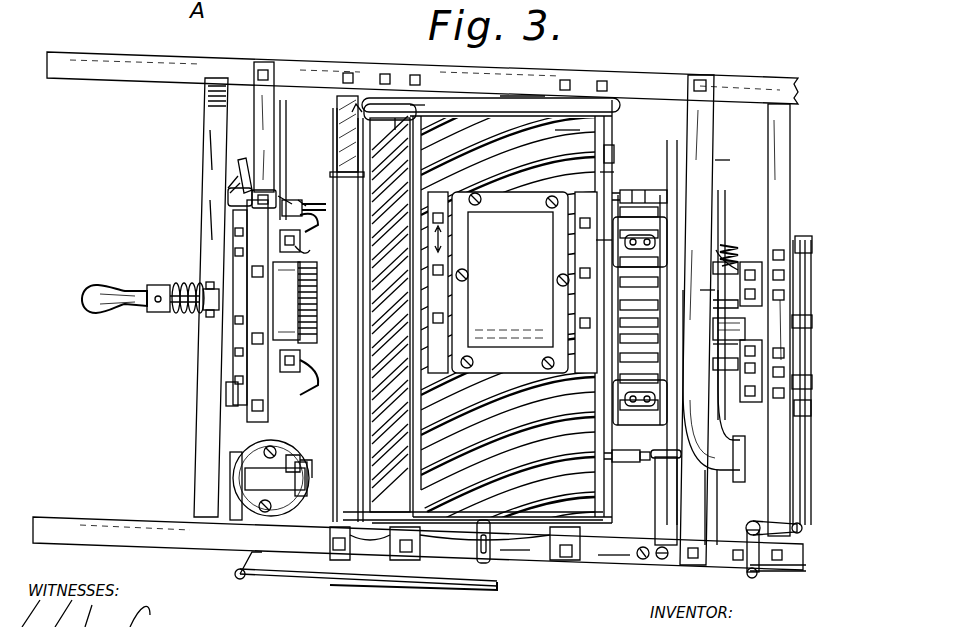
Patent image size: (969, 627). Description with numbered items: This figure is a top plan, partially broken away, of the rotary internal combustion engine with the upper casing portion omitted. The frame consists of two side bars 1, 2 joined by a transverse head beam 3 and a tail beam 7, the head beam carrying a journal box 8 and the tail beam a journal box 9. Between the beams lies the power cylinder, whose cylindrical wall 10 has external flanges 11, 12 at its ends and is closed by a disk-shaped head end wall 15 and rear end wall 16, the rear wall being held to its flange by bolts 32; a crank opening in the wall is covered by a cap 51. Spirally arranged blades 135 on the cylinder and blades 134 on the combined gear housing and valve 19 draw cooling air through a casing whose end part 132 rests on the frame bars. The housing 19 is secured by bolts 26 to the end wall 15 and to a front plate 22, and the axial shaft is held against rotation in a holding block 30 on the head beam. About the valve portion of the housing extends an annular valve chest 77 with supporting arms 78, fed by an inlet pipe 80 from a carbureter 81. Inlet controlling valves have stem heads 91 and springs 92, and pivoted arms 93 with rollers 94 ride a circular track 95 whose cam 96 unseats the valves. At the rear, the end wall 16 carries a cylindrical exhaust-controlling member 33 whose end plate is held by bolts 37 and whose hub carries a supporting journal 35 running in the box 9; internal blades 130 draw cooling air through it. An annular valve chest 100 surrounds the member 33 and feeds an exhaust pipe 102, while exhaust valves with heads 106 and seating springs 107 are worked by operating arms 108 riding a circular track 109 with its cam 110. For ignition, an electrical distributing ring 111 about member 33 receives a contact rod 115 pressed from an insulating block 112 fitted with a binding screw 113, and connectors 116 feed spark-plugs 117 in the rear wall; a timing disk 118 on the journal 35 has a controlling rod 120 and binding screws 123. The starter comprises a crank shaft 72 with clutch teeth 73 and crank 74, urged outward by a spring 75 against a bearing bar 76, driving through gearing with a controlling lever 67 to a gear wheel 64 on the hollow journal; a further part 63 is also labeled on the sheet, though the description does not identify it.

The side bar 1 is at (146, 66).
The side bar 2 is at (142, 541).
The transverse head beam 3 is at (262, 124).
The tail beam 7 is at (776, 128).
The journal box 8 is at (288, 290).
The journal box 9 is at (735, 306).
The cylindrical wall 10 is at (610, 175).
The external flange 11 is at (418, 105).
The external flange 12 is at (614, 150).
The head end wall 15 is at (395, 118).
The rear end wall 16 is at (606, 240).
The combined gear housing and valve 19 is at (355, 175).
The front plate 22 is at (310, 198).
The securing bolt 26 is at (368, 150).
The holding block 30 is at (238, 330).
The bolt 32 is at (628, 460).
The cylindrical exhaust-controlling member 33 is at (700, 290).
The supporting journal 35 is at (806, 236).
The bolt 37 is at (714, 344).
The cap 51 is at (492, 225).
The block 63 is at (714, 320).
The gear wheel 64 is at (280, 242).
The controlling lever 67 is at (240, 176).
The crank shaft 72 is at (210, 312).
The clutch teeth 73 is at (270, 292).
The crank 74 is at (140, 305).
The spring 75 is at (163, 312).
The bearing bar 76 is at (228, 200).
The annular valve chest 77 is at (362, 523).
The supporting arm 78 is at (340, 96).
The inlet pipe 80 is at (318, 500).
The carbureter 81 is at (245, 515).
The head 91 is at (290, 453).
The spring 92 is at (308, 458).
The arm 93 is at (296, 395).
The roller 94 is at (250, 390).
The circular track 95 is at (270, 262).
The cam 96 is at (226, 392).
The annular valve chest 100 is at (696, 240).
The exhaust pipe 102 is at (716, 478).
The head 106 is at (718, 250).
The seating spring 107 is at (755, 262).
The operating arm 108 is at (712, 270).
The circular track 109 is at (747, 540).
The cam 110 is at (740, 440).
The electrical distributing ring 111 is at (690, 195).
The insulating block 112 is at (662, 560).
The binding screw 113 is at (640, 560).
The contact rod 115 is at (662, 470).
The electrical connector 116 is at (672, 190).
The spark-plug 117 is at (643, 190).
The disk 118 is at (730, 258).
The controlling rod 120 is at (753, 521).
The binding screw 123 is at (712, 84).
The blade 130 is at (625, 255).
The end part 132 is at (528, 98).
The spirally arranged blade 134 is at (357, 108).
The spirally arranged blade 135 is at (570, 125).